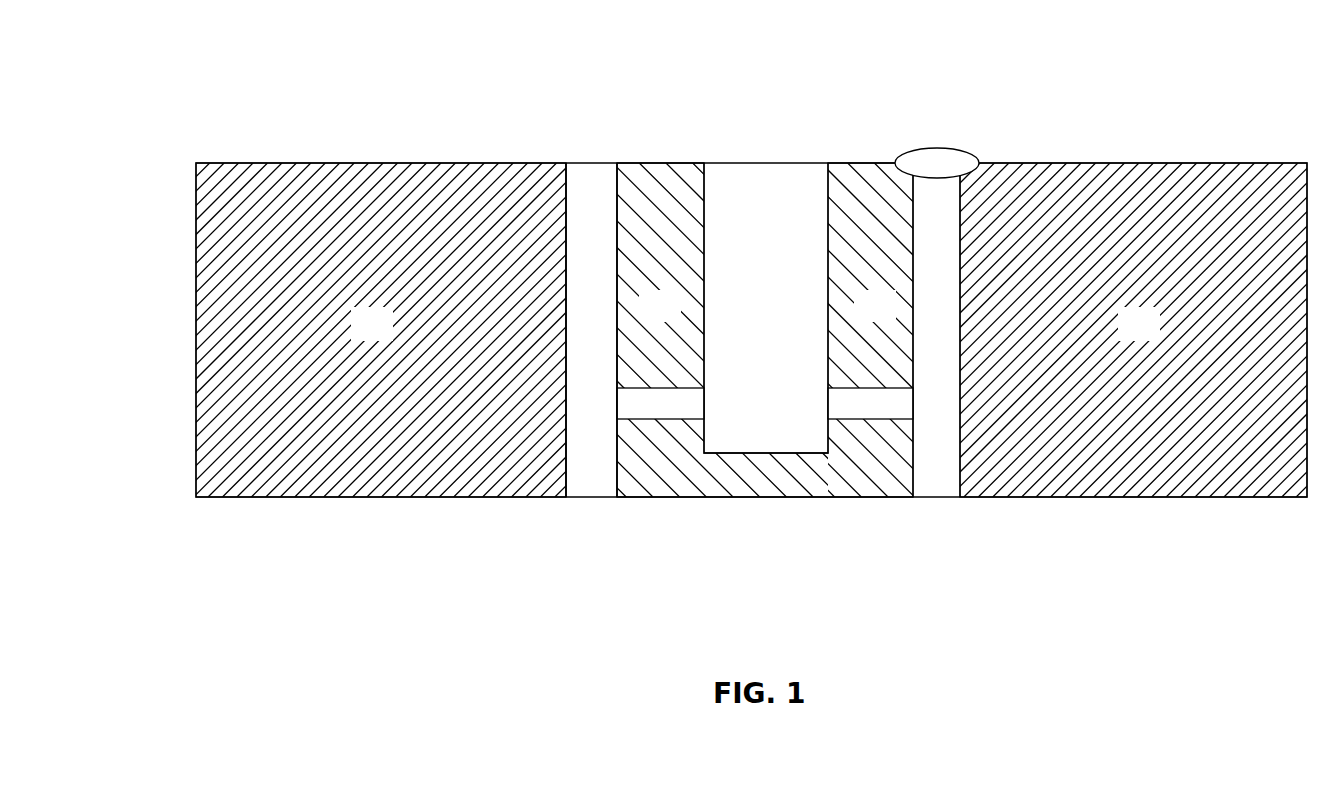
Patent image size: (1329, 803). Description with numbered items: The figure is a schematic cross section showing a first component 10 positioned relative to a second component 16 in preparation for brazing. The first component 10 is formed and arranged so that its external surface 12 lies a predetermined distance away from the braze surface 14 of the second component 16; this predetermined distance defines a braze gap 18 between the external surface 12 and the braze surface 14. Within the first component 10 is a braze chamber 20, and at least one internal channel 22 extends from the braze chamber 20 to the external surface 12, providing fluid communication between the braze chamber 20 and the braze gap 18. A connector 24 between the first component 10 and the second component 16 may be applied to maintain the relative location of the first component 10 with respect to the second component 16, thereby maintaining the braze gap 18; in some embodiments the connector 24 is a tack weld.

The first component 10 is at (676, 317).
The external surface 12 is at (617, 467).
The braze surface 14 is at (567, 467).
The second component 16 is at (388, 336).
The braze gap 18 is at (590, 189).
The braze chamber 20 is at (781, 317).
The internal channel 22 is at (689, 403).
The connector 24 is at (947, 148).